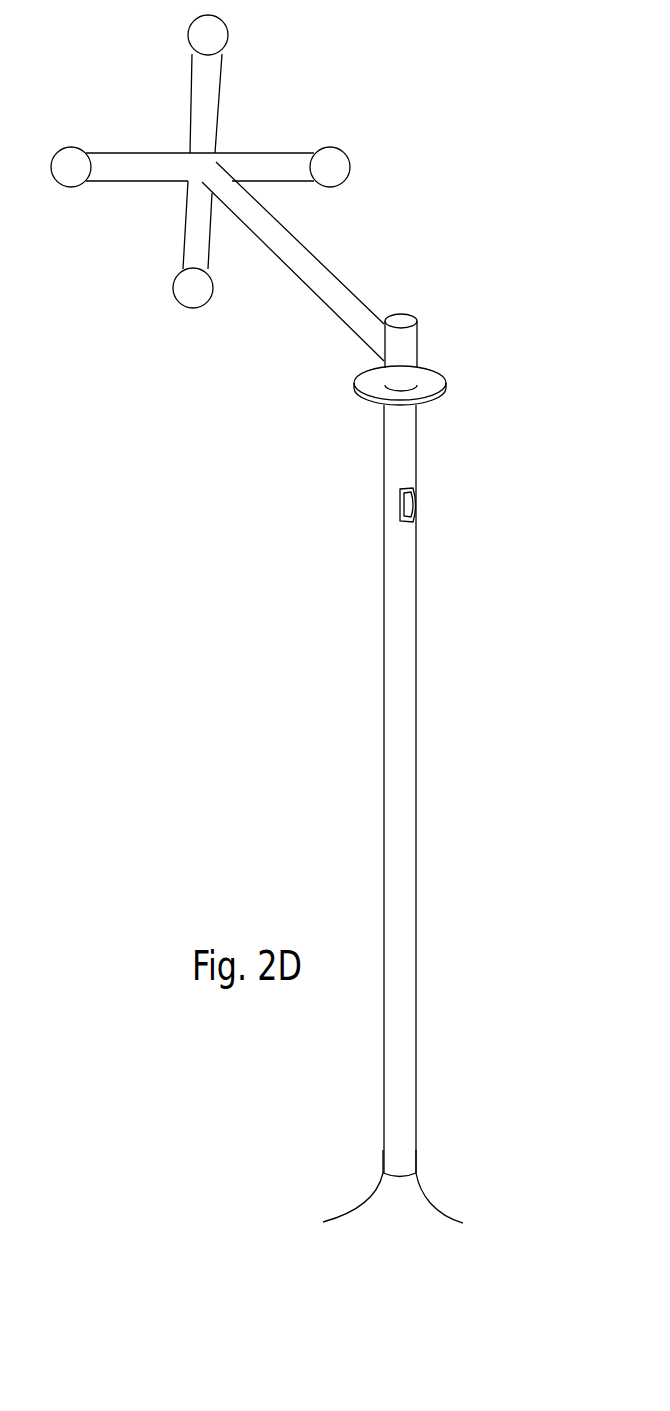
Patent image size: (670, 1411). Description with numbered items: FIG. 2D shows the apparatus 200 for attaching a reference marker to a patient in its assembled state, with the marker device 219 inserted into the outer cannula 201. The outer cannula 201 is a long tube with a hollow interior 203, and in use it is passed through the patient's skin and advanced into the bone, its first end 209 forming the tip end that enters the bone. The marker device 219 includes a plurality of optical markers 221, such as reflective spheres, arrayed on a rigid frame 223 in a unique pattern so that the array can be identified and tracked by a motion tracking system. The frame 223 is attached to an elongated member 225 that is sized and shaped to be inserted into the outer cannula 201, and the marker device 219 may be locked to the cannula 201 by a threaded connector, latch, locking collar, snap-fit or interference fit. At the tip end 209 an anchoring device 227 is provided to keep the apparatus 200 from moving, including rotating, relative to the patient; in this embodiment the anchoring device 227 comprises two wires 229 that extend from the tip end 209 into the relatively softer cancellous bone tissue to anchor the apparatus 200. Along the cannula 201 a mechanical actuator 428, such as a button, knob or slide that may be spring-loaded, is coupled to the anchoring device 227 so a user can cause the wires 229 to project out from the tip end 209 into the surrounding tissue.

The apparatus 200 is at (422, 91).
The outer cannula 201 is at (388, 670).
The hollow interior 203 is at (404, 1188).
The first end 209 is at (372, 1164).
The marker device 219 is at (337, 297).
The optical markers 221 is at (208, 35).
The rigid frame 223 is at (208, 93).
The elongated member 225 is at (398, 373).
The anchoring device 227 is at (460, 1173).
The wires 229 is at (358, 1213).
The mechanical actuator 428 is at (410, 505).